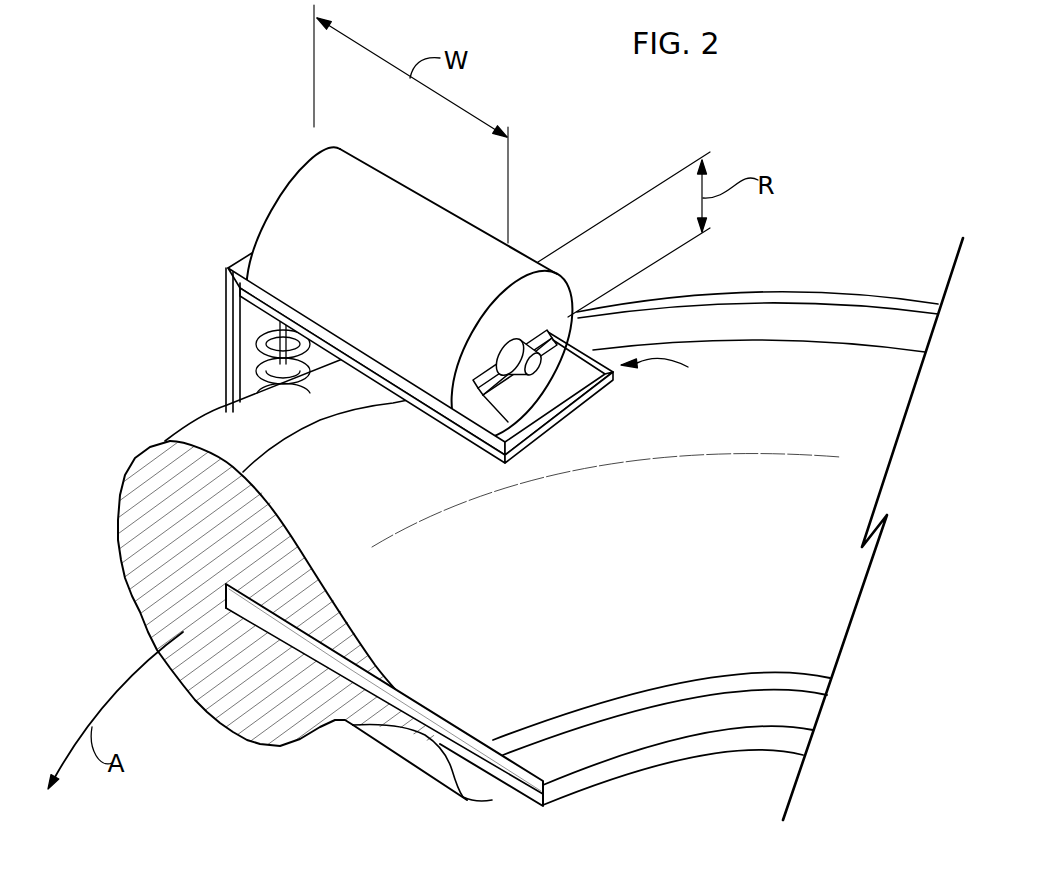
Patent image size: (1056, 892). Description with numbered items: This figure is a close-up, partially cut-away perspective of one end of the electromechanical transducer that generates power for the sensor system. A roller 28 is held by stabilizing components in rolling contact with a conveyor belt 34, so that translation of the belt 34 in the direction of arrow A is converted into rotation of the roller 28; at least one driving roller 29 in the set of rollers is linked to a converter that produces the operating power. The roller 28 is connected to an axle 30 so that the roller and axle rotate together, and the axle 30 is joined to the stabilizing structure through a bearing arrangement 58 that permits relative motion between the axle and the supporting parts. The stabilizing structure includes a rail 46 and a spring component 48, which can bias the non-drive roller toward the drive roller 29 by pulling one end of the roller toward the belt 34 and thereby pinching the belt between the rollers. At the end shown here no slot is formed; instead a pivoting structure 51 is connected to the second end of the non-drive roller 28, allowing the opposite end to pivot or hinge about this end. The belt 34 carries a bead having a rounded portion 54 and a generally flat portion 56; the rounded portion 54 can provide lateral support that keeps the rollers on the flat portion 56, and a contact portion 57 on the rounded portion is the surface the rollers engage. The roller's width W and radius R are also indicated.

The roller 28 is at (417, 185).
The driving roller 29 is at (403, 757).
The axle 30 is at (518, 352).
The conveyor belt 34 is at (497, 786).
The rail 46 is at (240, 254).
The spring component 48 is at (258, 336).
The pivoting structure 51 is at (668, 369).
The rounded portion of the bead 54 is at (153, 641).
The generally flat portion of the bead 56 is at (428, 767).
The contact portion 57 is at (930, 326).
The bearing arrangement 58 is at (473, 378).